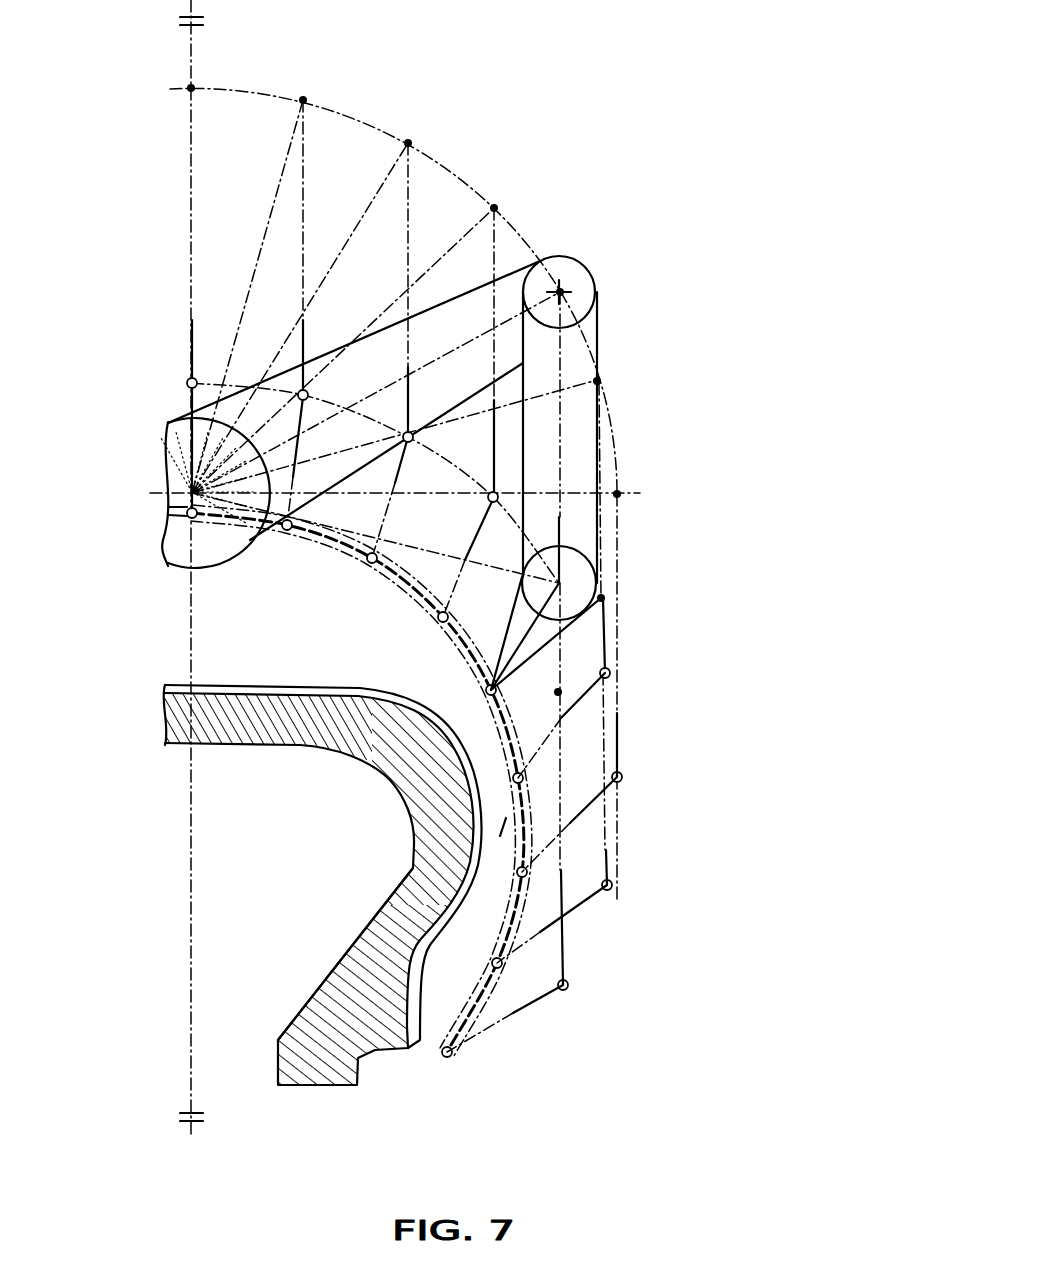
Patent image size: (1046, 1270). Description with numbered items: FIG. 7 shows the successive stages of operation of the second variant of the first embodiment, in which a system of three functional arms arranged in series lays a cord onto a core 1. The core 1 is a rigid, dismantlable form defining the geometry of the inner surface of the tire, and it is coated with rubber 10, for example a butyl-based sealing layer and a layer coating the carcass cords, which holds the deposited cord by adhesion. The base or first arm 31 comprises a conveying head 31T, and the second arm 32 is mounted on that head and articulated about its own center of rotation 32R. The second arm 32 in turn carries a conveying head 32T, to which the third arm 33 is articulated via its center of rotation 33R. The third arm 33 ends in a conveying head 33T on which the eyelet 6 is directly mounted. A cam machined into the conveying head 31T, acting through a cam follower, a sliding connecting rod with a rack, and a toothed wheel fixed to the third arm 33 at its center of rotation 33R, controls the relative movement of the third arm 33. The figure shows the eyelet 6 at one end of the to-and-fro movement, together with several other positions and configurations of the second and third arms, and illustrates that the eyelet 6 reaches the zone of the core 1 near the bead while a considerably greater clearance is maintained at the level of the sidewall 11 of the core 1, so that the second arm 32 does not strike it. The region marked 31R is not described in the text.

The first arm 31 is at (467, 310).
The conveying head of the first arm 31T is at (598, 264).
The blade root 31R is at (180, 488).
The second arm 32 is at (592, 380).
The center of rotation of the second arm 32R is at (577, 290).
The conveying head of the second arm 32T is at (610, 568).
The third arm 33 is at (598, 643).
The center of rotation of the third arm 33R is at (606, 602).
The conveying head of the third arm 33T is at (502, 830).
The eyelet 6 is at (483, 705).
The rubber 10 is at (252, 680).
The core 1 is at (327, 735).
The sidewall of the core 11 is at (440, 857).